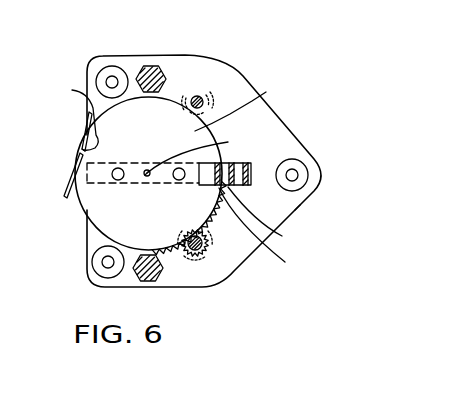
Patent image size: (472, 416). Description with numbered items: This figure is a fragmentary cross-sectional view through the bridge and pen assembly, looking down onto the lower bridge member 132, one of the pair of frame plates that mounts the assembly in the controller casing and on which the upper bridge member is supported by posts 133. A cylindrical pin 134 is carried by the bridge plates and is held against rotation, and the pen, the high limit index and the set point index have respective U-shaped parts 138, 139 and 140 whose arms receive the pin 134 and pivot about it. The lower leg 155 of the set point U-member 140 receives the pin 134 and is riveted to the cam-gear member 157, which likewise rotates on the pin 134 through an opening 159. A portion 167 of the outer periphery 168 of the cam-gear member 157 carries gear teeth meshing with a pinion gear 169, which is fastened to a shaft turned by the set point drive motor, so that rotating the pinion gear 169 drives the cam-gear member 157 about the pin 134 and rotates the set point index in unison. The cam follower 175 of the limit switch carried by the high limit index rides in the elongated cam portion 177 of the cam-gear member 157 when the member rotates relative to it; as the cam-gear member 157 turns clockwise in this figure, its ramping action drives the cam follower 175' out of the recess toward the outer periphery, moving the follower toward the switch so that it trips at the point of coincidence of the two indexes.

The lower bridge member 132 is at (280, 140).
The posts 133 is at (164, 70).
The cylindrical pin 134 is at (147, 177).
The U-shaped part 138 is at (252, 170).
The U-shaped part 139 is at (295, 210).
The U-shaped part 140 is at (278, 232).
The lower leg 155 is at (114, 163).
The cam-gear member 157 is at (248, 103).
The opening 159 is at (205, 148).
The toothed portion 167 is at (265, 234).
The outer periphery 168 is at (80, 200).
The pinion gear 169 is at (207, 252).
The cam follower 175 is at (51, 155).
The cam follower 175' is at (51, 134).
The elongated cam portion 177 is at (68, 114).